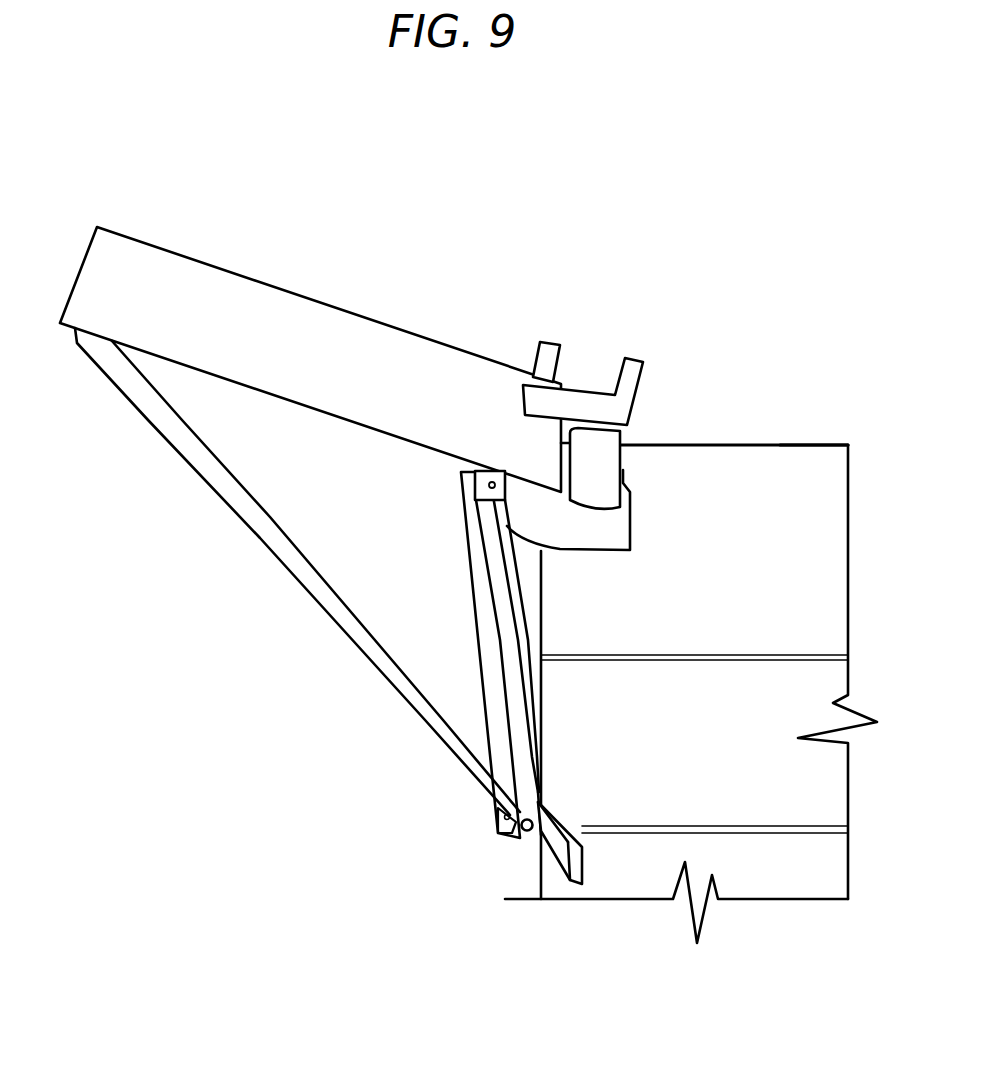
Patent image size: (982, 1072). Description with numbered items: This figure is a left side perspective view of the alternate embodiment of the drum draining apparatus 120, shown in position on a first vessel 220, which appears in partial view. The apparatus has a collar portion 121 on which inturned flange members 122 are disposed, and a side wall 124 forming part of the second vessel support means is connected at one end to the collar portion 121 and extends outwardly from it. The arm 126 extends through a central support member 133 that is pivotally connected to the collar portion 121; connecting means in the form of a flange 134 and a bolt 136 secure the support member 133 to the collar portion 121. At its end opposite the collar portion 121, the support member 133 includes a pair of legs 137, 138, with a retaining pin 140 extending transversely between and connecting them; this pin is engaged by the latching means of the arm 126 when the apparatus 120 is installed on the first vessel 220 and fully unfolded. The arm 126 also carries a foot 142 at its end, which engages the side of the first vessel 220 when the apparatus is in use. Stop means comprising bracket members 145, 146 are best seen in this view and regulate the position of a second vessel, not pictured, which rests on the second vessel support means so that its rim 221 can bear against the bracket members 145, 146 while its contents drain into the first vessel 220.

The drum draining apparatus 120 is at (392, 220).
The collar portion 121 is at (618, 543).
The inturned flange members 122 is at (612, 455).
The side wall 124 is at (253, 329).
The arm 126 is at (170, 445).
The central support member 133 is at (478, 628).
The flange 134 is at (476, 485).
The bolt 136 is at (491, 505).
The leg 137 is at (500, 768).
The leg 138 is at (527, 779).
The retaining pin 140 is at (520, 832).
The foot 142 is at (588, 852).
The bracket member 145 is at (550, 347).
The bracket member 146 is at (633, 366).
The first vessel 220 is at (776, 540).
The rim 221 is at (810, 444).